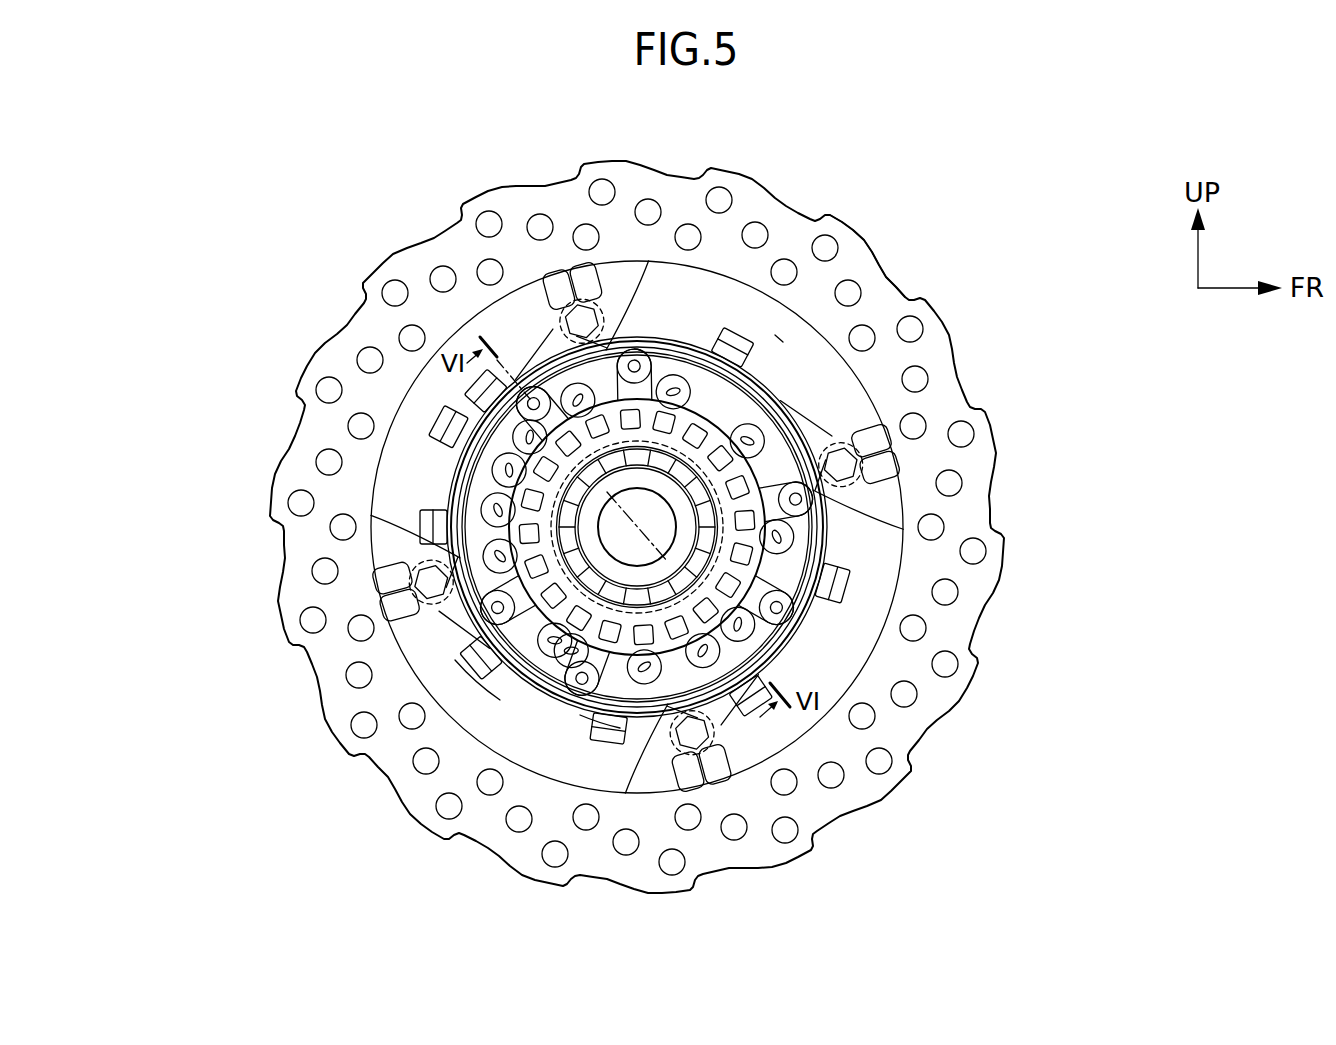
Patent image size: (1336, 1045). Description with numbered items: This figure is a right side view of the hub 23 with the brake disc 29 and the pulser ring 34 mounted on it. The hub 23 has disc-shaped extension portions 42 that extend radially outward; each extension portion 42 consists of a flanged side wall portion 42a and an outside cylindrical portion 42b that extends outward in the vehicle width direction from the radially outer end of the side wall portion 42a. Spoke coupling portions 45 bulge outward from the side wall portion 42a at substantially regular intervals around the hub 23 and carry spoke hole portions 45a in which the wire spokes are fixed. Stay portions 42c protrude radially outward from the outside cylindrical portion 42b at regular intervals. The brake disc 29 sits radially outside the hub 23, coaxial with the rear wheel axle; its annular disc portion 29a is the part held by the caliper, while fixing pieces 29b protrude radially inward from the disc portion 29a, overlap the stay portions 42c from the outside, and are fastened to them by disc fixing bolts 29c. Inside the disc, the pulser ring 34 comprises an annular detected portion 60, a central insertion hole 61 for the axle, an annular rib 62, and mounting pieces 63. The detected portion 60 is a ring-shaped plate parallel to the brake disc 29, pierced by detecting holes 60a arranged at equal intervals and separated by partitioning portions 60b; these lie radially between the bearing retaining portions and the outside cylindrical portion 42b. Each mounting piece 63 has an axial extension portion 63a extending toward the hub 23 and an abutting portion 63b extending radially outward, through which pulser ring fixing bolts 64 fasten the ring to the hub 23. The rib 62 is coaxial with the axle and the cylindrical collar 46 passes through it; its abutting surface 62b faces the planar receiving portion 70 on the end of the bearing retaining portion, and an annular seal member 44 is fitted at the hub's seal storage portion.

The hub 23 is at (456, 446).
The brake disc 29 is at (783, 197).
The annular disc portion 29a is at (838, 217).
The fixing pieces 29b is at (680, 343).
The disc fixing bolts 29c is at (655, 345).
The pulser ring 34 is at (775, 395).
The extension portions 42 is at (805, 655).
The flanged side wall portion 42a is at (727, 760).
The outside cylindrical portion 42b is at (750, 755).
The stay portions 42c is at (580, 318).
The seal member 44 is at (555, 700).
The spoke coupling portions 45 is at (580, 735).
The spoke hole portions 45a is at (640, 715).
The cylindrical collar 46 is at (655, 660).
The annular detected portion 60 is at (852, 395).
The detecting holes 60a is at (505, 548).
The partitioning portions 60b is at (508, 562).
The insertion hole 61 is at (868, 417).
The annular rib 62 is at (805, 548).
The abutting surface 62b is at (780, 330).
The mounting pieces 63 is at (684, 388).
The axial extension portions 63a is at (508, 555).
The abutting portions 63b is at (508, 583).
The pulser ring fixing bolts 64 is at (642, 360).
The receiving portion 70 is at (752, 335).